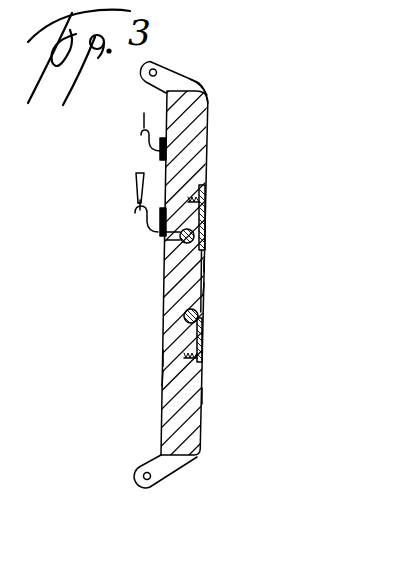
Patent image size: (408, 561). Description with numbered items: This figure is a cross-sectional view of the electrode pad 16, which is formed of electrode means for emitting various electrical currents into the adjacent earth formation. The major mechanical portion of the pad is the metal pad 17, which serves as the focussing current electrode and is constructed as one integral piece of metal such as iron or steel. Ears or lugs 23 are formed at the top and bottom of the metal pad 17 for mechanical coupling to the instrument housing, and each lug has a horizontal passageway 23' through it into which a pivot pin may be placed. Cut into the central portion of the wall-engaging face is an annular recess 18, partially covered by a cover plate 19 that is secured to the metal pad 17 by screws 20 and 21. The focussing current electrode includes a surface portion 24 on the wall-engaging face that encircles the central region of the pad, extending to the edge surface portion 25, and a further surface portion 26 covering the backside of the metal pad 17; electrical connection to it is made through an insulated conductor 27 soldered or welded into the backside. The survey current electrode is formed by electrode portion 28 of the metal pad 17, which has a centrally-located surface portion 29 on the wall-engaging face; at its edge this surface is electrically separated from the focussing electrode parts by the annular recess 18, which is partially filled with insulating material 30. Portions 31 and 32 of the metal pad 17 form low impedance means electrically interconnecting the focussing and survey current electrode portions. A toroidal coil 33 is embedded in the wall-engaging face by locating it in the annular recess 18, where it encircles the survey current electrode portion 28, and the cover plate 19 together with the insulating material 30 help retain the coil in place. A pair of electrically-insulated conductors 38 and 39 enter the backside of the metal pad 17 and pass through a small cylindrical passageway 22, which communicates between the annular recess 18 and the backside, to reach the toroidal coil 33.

The electrode pad 16 is at (160, 338).
The metal pad 17 is at (164, 378).
The annular recess 18 is at (205, 254).
The cover plate 19 is at (203, 333).
The screw 20 is at (206, 193).
The screw 21 is at (203, 356).
The cylindrical passageway 22 is at (157, 212).
The lug 23 is at (194, 274).
The horizontal passageway 23' is at (207, 72).
The surface portion 24 is at (203, 396).
The edge surface portion 25 is at (201, 85).
The surface portion 26 is at (164, 358).
The insulated conductor 27 is at (140, 140).
The electrode portion 28 is at (205, 268).
The surface portion 29 is at (206, 294).
The insulating material 30 is at (206, 238).
The interconnecting portion 31 is at (160, 256).
The interconnecting portion 32 is at (178, 316).
The toroidal coil 33 is at (207, 225).
The electrically-insulated conductor 38 is at (133, 190).
The electrically-insulated conductor 39 is at (136, 175).